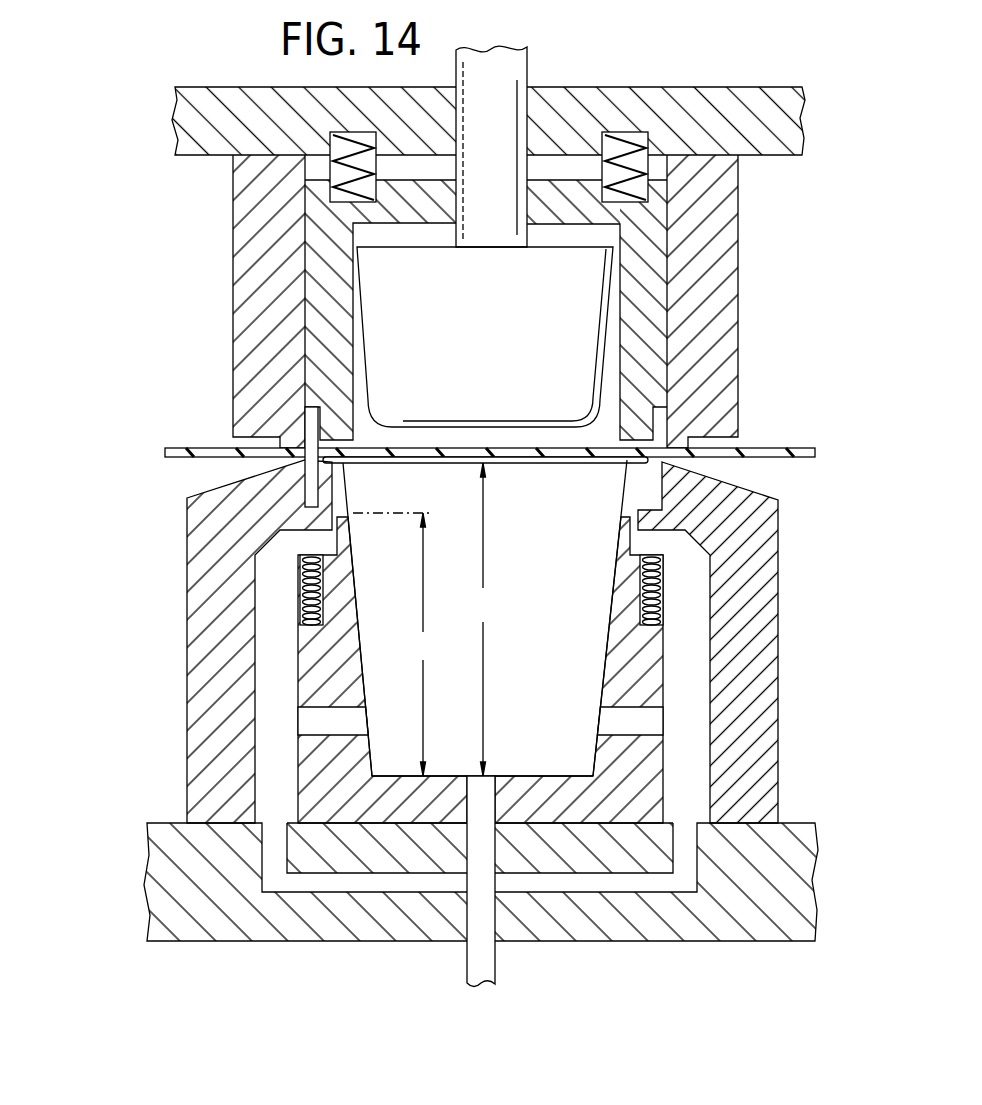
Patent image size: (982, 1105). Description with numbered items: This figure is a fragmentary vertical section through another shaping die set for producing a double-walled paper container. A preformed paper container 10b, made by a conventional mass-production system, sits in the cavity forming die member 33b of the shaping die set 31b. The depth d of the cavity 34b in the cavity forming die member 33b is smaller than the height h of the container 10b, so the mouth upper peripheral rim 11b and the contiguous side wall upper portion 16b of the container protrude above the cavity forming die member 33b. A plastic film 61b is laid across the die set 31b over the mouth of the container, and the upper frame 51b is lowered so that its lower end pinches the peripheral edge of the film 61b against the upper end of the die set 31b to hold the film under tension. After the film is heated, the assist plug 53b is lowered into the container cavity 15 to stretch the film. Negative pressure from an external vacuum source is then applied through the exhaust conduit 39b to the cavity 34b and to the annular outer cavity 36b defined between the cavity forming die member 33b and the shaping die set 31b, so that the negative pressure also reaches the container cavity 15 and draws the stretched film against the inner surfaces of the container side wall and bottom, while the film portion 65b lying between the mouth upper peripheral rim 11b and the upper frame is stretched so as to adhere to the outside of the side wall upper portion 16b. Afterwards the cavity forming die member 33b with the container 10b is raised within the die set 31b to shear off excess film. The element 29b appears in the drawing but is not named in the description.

The upper frame 51b is at (723, 318).
The assist plug 53b is at (495, 355).
The plastic film 61b is at (777, 452).
The mouth upper peripheral rim 11b is at (395, 464).
The shaping die set 31b is at (765, 573).
The film portion 65b is at (323, 459).
The cavity forming die member 33b is at (650, 666).
The cavity 34b is at (415, 726).
The annular outer cavity 36b is at (707, 733).
The spring 29b is at (655, 577).
The side wall upper portion 16b is at (345, 497).
The preformed paper container 10b is at (568, 509).
The container cavity 15 is at (553, 621).
The exhaust conduit 39b is at (497, 975).